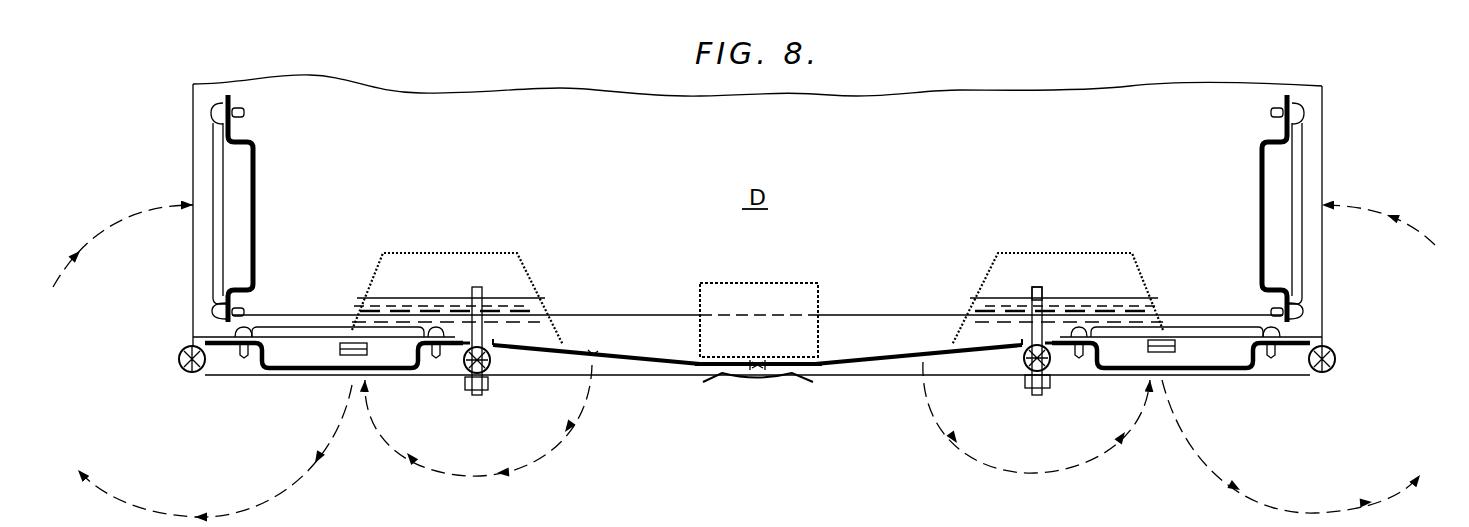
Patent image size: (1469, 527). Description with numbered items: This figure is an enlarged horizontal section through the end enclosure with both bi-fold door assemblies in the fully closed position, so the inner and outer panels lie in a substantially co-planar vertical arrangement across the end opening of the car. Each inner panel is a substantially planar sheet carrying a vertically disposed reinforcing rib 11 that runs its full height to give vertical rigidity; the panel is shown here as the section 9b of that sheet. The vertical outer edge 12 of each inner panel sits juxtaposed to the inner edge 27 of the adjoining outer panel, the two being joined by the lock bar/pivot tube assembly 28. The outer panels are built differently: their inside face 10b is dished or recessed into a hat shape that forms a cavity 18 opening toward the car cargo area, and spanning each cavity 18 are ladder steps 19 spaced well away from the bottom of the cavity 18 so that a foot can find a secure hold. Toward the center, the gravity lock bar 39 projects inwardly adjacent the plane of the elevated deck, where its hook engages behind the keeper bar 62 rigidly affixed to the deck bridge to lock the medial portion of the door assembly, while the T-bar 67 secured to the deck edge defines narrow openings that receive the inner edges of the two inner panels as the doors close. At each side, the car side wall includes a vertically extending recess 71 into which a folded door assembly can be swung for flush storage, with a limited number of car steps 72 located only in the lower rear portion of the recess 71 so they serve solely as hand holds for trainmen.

The inside face of the outer panel 10b is at (289, 366).
The inner edge of the outer panel 27 is at (468, 343).
The lock bar/pivot tube assembly 28 is at (1043, 400).
The gravity lock bar 39 is at (1038, 281).
The vertical outer edge of the inner panel 12 is at (492, 341).
The sloping bottom panel 9b is at (636, 353).
The reinforcing rib 11 is at (596, 354).
The T-bar 67 is at (782, 383).
The keeper bar 62 is at (985, 302).
The ladder steps 19 is at (1168, 330).
The cavity 18 is at (1202, 357).
The vertically extending recess 71 is at (1273, 172).
The car steps 72 is at (1293, 262).